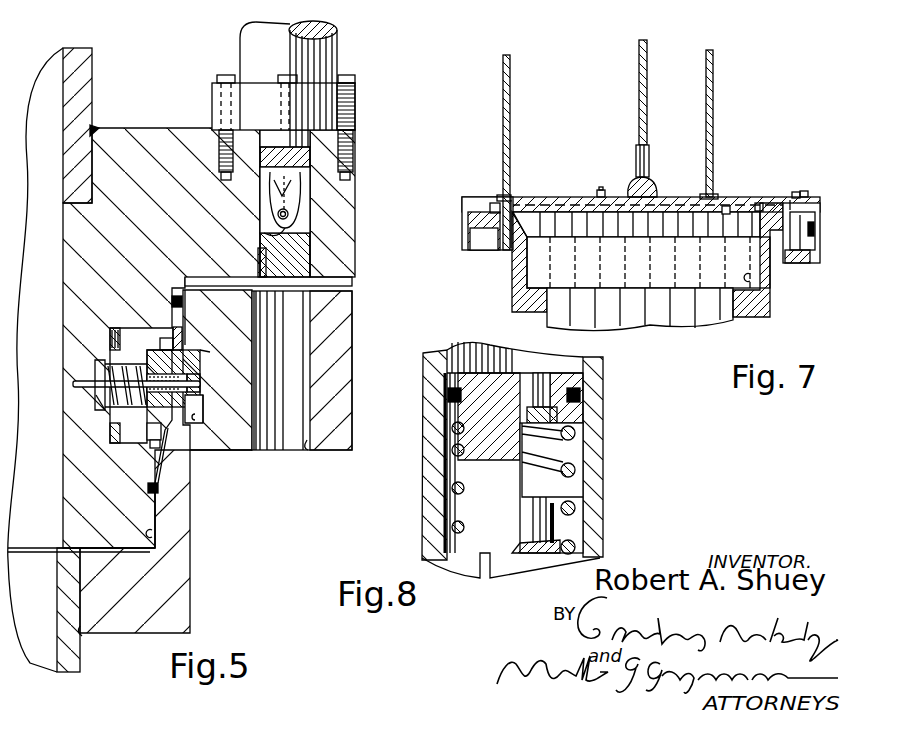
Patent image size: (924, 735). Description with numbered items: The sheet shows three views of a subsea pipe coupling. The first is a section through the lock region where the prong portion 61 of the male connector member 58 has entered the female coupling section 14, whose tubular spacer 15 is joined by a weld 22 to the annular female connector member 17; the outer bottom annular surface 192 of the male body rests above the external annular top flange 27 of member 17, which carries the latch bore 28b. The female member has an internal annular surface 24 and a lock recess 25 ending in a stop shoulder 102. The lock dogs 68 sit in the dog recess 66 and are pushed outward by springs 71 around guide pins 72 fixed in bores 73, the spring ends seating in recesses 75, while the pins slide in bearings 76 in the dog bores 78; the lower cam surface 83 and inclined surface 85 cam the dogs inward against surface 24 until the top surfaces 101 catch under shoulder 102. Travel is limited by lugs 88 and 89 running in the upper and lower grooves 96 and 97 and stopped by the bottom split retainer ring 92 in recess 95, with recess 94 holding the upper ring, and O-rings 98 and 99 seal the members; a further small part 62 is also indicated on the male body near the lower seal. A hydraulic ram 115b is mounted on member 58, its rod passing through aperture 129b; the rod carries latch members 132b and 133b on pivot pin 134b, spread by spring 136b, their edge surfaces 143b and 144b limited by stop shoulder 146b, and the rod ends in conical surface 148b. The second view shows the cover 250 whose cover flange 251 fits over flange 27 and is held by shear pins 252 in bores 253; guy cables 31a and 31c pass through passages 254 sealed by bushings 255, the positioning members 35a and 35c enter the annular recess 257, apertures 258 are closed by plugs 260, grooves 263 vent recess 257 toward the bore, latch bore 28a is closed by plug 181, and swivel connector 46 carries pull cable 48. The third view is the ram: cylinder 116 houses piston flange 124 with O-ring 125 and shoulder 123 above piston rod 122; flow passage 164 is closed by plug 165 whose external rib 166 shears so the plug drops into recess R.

In FIG. 5, the tubular spacer 15 is at (78, 660).
In FIG. 7, the tubular spacer 15 is at (735, 320).
In FIG. 5, the prong portion 61 is at (63, 448).
In FIG. 5, the lock dogs 68 is at (195, 345).
In FIG. 5, the annular female connector member 17 is at (197, 613).
In FIG. 7, the annular female connector member 17 is at (778, 306).
In FIG. 5, the external annular top flange 27 is at (352, 347).
In FIG. 7, the external annular top flange 27 is at (490, 252).
In FIG. 5, the outer bottom annular surface 192 is at (258, 262).
In FIG. 5, the male connector member 58 is at (365, 148).
In FIG. 5, the aperture of the bottom flange 129b is at (268, 140).
In FIG. 5, the hydraulic ram 115b is at (337, 45).
In FIG. 5, the spring 136b is at (300, 190).
In FIG. 5, the pivot pin 134b is at (318, 246).
In FIG. 5, the latch member 132b is at (300, 200).
In FIG. 5, the latch member 133b is at (273, 200).
In FIG. 5, the outer downwardly facing edge surface 143b is at (308, 206).
In FIG. 5, the outer downwardly facing edge surface 144b is at (285, 215).
In FIG. 5, the stop shoulder 146b is at (318, 228).
In FIG. 5, the conical annular surface 148b is at (270, 255).
In FIG. 5, the upper groove 96 is at (145, 330).
In FIG. 5, the lower groove 97 is at (112, 436).
In FIG. 5, the external annular dog recess 66 is at (118, 330).
In FIG. 5, the top lug 88 is at (160, 336).
In FIG. 5, the bearing 76 is at (190, 367).
In FIG. 5, the bore of the lock dog 78 is at (200, 395).
In FIG. 5, the bore 73 is at (73, 384).
In FIG. 5, the guide pin 72 is at (100, 375).
In FIG. 5, the spring 71 is at (95, 402).
In FIG. 5, the recess 75 is at (112, 415).
In FIG. 5, the upwardly and outwardly inclined arcuate surface 85 is at (200, 413).
In FIG. 5, the bottom lug 89 is at (148, 440).
In FIG. 5, the bottom external recess 95 is at (162, 452).
In FIG. 5, the bottom split retainer ring 92 is at (165, 453).
In FIG. 5, the top external recess 94 is at (180, 328).
In FIG. 5, the O-ring 98 is at (176, 296).
In FIG. 5, the O-ring 99 is at (148, 488).
In FIG. 5, the ring 62 is at (157, 506).
In FIG. 5, the top surfaces of the lock dogs 101 is at (190, 330).
In FIG. 5, the stop shoulder 102 is at (205, 365).
In FIG. 5, the internal annular lock recess 25 is at (208, 420).
In FIG. 7, the internal annular lock recess 25 is at (718, 255).
In FIG. 5, the lower cam surface 83 is at (205, 448).
In FIG. 5, the internal annular surface 24 is at (150, 533).
In FIG. 7, the internal annular surface 24 is at (752, 278).
In FIG. 5, the latch bore 28b is at (306, 447).
In FIG. 5, the weld 22 is at (82, 630).
In FIG. 7, the cover 250 is at (585, 197).
In FIG. 7, the bores 253 is at (476, 235).
In FIG. 7, the guy cable 31a is at (511, 125).
In FIG. 7, the bushing or gasket 255 is at (502, 196).
In FIG. 7, the positioning member 35a is at (492, 203).
In FIG. 7, the passage 254 is at (535, 198).
In FIG. 7, the female coupling section 14 is at (505, 297).
In FIG. 7, the latch bore 28a is at (822, 215).
In FIG. 7, the plug 181 is at (790, 262).
In FIG. 7, the shear pin / O-ring 252 is at (820, 250).
In FIG. 7, the cover flange 251 is at (816, 236).
In FIG. 7, the downwardly opening annular recess 257 is at (790, 200).
In FIG. 7, the aperture 258 is at (795, 193).
In FIG. 7, the plug 260 is at (804, 191).
In FIG. 7, the positioning member 35c is at (758, 203).
In FIG. 7, the downwardly opening groove 263 is at (612, 222).
In FIG. 7, the pull cable 48 is at (648, 100).
In FIG. 7, the swivel connector 46 is at (668, 180).
In FIG. 7, the guy cable 31c is at (713, 100).
In FIG. 8, the cylinder 116 is at (595, 458).
In FIG. 8, the external rib 166 is at (525, 400).
In FIG. 8, the flow passage 164 is at (550, 380).
In FIG. 8, the plug 165 is at (560, 415).
In FIG. 8, the O-ring 125 is at (582, 398).
In FIG. 8, the piston flange 124 is at (450, 395).
In FIG. 8, the annular shoulder 123 is at (452, 428).
In FIG. 8, the recess R is at (560, 484).
In FIG. 8, the piston rod 122 is at (560, 530).